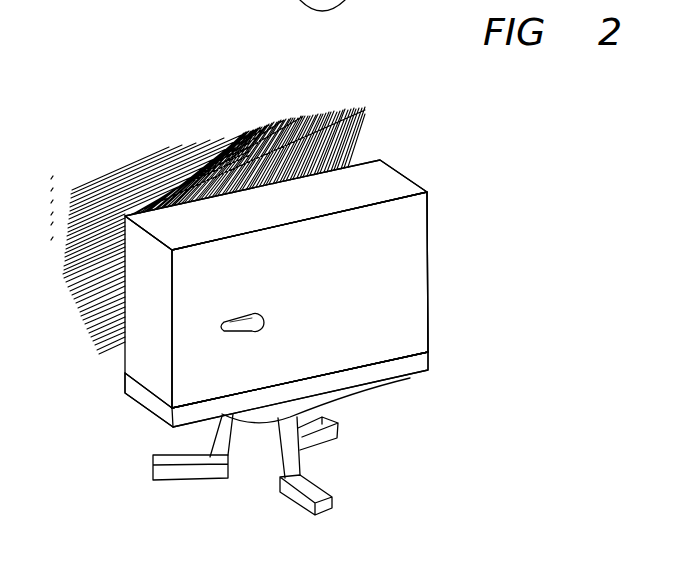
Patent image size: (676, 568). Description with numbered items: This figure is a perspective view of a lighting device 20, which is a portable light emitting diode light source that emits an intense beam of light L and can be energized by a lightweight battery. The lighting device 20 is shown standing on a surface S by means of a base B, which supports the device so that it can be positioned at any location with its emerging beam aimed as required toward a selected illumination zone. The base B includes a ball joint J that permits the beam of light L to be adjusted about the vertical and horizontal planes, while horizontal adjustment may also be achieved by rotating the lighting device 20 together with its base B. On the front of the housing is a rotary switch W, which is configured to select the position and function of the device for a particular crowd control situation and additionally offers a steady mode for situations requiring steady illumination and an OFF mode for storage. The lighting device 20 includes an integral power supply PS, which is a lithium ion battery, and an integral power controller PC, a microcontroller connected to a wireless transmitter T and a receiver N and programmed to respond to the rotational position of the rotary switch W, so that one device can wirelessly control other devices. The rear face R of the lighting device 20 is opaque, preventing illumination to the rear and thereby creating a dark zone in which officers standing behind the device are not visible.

The lighting device 20 is at (585, 87).
The beam of light L is at (72, 187).
The wireless transmitter T is at (387, 180).
The receiver N is at (395, 225).
The power controller PC is at (415, 250).
The rotary switch W is at (258, 322).
The rear face R is at (397, 313).
The ball joint J is at (310, 403).
The power supply PS is at (143, 393).
The base B is at (330, 498).
The surface S is at (375, 513).